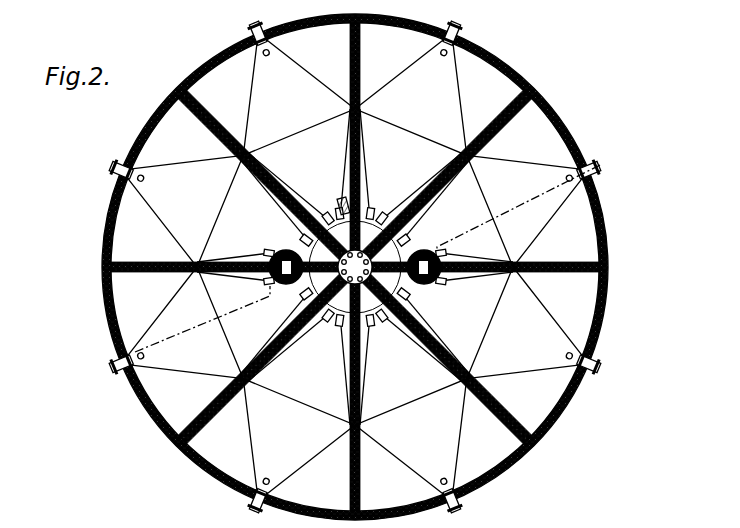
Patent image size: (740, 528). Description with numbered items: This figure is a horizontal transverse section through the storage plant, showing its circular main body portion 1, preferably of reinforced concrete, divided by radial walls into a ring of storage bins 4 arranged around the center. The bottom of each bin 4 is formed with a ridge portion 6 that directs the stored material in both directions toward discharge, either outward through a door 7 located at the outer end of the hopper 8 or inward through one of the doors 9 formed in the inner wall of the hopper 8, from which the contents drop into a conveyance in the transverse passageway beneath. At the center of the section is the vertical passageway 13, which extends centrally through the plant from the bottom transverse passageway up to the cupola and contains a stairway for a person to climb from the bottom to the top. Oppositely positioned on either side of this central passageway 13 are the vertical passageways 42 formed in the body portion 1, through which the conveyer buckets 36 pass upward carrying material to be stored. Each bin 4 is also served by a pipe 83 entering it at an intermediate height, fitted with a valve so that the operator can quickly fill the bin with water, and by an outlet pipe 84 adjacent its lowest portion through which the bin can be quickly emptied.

The main body portion 1 is at (546, 110).
The storage bin 4 is at (181, 478).
The ridge portion 6 is at (220, 210).
The door 7 is at (262, 33).
The hopper 8 is at (607, 333).
The door 9 is at (339, 204).
The passageway 13 is at (355, 267).
The conveyer bucket 36 is at (440, 257).
The vertical passageway 42 is at (433, 283).
The pipe 83 is at (300, 250).
The outlet pipe 84 is at (444, 57).